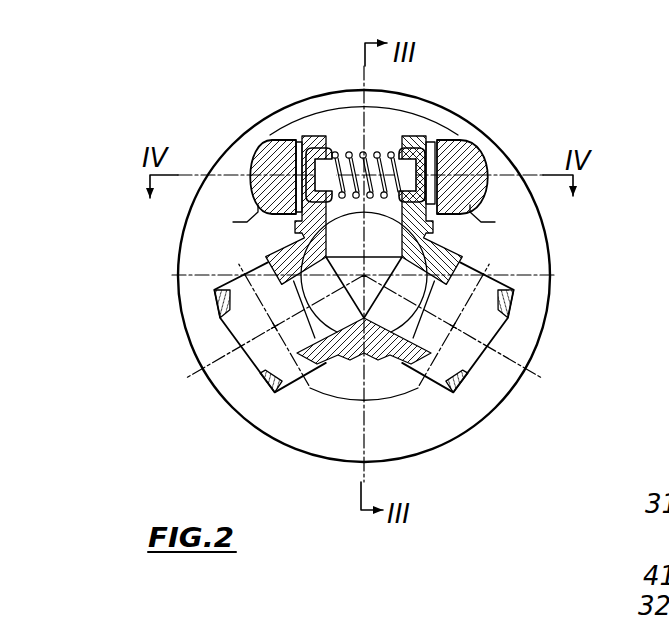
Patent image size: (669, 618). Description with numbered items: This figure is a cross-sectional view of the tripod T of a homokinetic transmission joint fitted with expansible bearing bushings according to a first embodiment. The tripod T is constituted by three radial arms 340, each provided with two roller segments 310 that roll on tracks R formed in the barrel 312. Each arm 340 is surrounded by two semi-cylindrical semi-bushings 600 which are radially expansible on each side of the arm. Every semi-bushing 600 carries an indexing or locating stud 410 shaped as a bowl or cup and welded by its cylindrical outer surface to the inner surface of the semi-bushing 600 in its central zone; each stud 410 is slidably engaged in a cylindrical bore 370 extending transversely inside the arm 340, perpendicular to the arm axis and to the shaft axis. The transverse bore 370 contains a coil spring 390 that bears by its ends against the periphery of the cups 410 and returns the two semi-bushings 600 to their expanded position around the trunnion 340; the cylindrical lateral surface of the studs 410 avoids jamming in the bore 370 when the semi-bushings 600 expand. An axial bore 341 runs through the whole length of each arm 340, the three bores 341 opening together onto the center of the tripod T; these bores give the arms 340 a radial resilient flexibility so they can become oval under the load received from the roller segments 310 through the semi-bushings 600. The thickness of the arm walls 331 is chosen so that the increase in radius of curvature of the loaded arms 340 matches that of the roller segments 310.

The barrel 312 is at (233, 141).
The roller segments 310 is at (277, 153).
The semi-cylindrical semi-bushings 600 is at (303, 143).
The coil spring 390 is at (378, 152).
The indexing stud 410 is at (420, 146).
The cylindrical bore 370 is at (436, 140).
The radial arms 340 is at (296, 222).
The wall of the arm 331 is at (452, 263).
The axial bore 341 is at (228, 327).
The tracks R is at (258, 199).
The tripod T is at (458, 394).